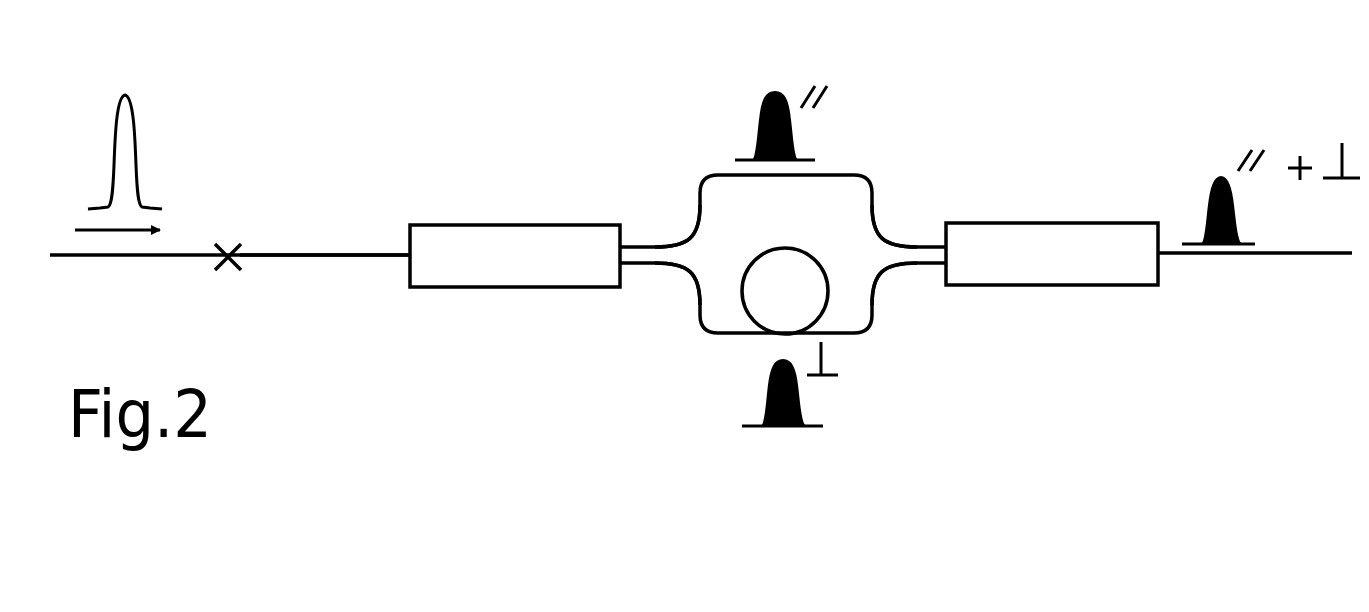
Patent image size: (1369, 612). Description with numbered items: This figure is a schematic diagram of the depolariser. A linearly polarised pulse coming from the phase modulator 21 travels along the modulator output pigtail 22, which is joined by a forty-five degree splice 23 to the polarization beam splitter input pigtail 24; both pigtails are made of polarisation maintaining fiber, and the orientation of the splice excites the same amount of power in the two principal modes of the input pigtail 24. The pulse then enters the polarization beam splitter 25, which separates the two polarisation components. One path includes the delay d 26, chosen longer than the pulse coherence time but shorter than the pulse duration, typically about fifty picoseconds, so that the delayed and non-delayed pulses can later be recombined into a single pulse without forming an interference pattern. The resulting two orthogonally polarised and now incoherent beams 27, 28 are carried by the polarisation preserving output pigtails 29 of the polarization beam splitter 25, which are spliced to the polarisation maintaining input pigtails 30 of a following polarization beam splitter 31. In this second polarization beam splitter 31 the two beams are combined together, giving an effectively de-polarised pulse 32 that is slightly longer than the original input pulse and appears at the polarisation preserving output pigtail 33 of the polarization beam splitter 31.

The phase modulator 21 is at (117, 148).
The modulator output pigtail 22 is at (142, 258).
The 45 degree splice 23 is at (233, 241).
The polarization beam splitter input pigtail 24 is at (360, 258).
The polarization beam splitter 25 is at (515, 256).
The delay d 26 is at (783, 254).
The orthogonally polarised beam 27 is at (741, 128).
The orthogonally polarised beam 28 is at (786, 437).
The polarisation preserving output pigtails 29 is at (683, 267).
The polarisation maintaining input pigtails 30 is at (898, 263).
The polarization beam splitter 31 is at (1052, 254).
The de-polarised pulse 32 is at (1195, 186).
The polarisation preserving output pigtail 33 is at (1330, 257).